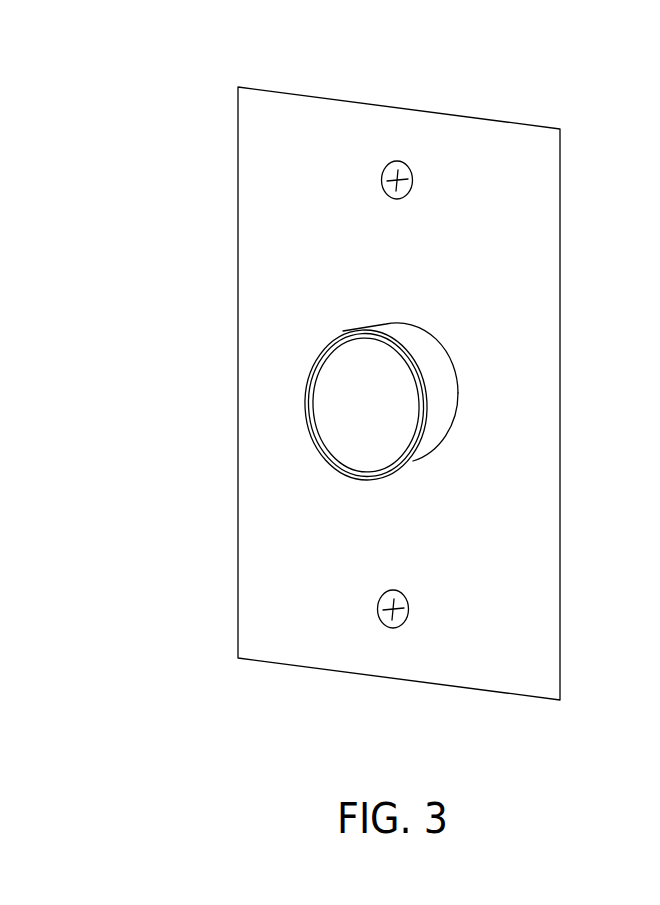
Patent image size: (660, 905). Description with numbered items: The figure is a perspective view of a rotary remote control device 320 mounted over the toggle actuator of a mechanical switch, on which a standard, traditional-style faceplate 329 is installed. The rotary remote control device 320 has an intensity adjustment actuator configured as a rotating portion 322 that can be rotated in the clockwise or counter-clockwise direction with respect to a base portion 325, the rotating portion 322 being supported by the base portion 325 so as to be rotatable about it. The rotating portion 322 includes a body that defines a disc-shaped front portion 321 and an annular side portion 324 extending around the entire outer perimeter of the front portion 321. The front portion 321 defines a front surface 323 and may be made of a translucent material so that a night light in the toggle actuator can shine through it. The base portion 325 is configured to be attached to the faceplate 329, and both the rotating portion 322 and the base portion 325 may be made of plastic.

The faceplate 329 is at (455, 182).
The rotary remote control device 320 is at (387, 334).
The rotating portion 322 is at (307, 382).
The front surface 323 is at (357, 425).
The front portion 321 is at (395, 425).
The side portion 324 is at (423, 350).
The base portion 325 is at (460, 383).